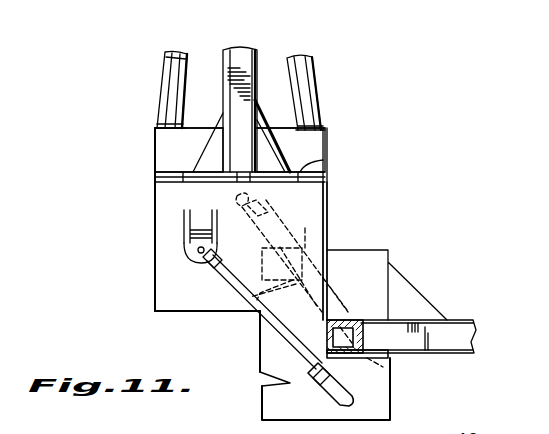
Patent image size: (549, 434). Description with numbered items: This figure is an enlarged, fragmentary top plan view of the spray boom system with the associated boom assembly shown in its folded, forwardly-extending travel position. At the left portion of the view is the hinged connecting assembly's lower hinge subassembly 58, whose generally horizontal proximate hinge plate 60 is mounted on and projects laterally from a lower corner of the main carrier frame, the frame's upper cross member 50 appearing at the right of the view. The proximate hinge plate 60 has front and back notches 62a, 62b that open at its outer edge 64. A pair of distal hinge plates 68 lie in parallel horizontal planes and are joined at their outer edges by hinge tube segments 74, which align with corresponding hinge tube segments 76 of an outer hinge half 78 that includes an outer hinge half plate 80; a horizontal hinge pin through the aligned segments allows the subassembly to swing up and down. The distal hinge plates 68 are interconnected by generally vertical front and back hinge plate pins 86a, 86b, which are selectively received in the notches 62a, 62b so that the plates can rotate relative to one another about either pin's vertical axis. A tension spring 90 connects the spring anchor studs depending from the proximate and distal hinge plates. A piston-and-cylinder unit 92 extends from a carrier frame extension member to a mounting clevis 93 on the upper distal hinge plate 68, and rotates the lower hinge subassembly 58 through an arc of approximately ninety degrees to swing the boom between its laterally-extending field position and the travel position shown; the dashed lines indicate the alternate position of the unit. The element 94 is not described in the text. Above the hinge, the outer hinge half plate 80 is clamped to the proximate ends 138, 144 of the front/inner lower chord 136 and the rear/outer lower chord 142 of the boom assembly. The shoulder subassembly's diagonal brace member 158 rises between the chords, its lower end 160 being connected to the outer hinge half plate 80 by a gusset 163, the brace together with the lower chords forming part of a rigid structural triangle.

The upper cross member 50 is at (401, 351).
The lower hinge subassembly 58 is at (391, 213).
The proximate hinge plate 60 is at (390, 250).
The front notch 62a is at (252, 298).
The back notch 62b is at (262, 388).
The outer edge 64 is at (260, 362).
The distal hinge plates 68 is at (190, 279).
The hinge tube segments 74 is at (326, 164).
The hinge tube segments 76 is at (327, 194).
The outer hinge half 78 is at (325, 134).
The outer hinge half plate 80 is at (189, 162).
The front hinge plate pin 86a is at (312, 283).
The back hinge plate pin 86b is at (190, 286).
The tension spring 90 is at (271, 203).
The piston-and-cylinder unit 92 is at (328, 402).
The mounting clevis 93 is at (171, 246).
The tube 94 is at (366, 337).
The front/inner lower chord 136 is at (313, 64).
The proximate end of front/inner lower chord 138 is at (325, 121).
The rear/outer lower chord 142 is at (166, 56).
The proximate end of rear/outer lower chord 144 is at (163, 116).
The diagonal brace member 158 is at (257, 50).
The lower end of diagonal brace member 160 is at (247, 163).
The gusset 163 is at (268, 125).